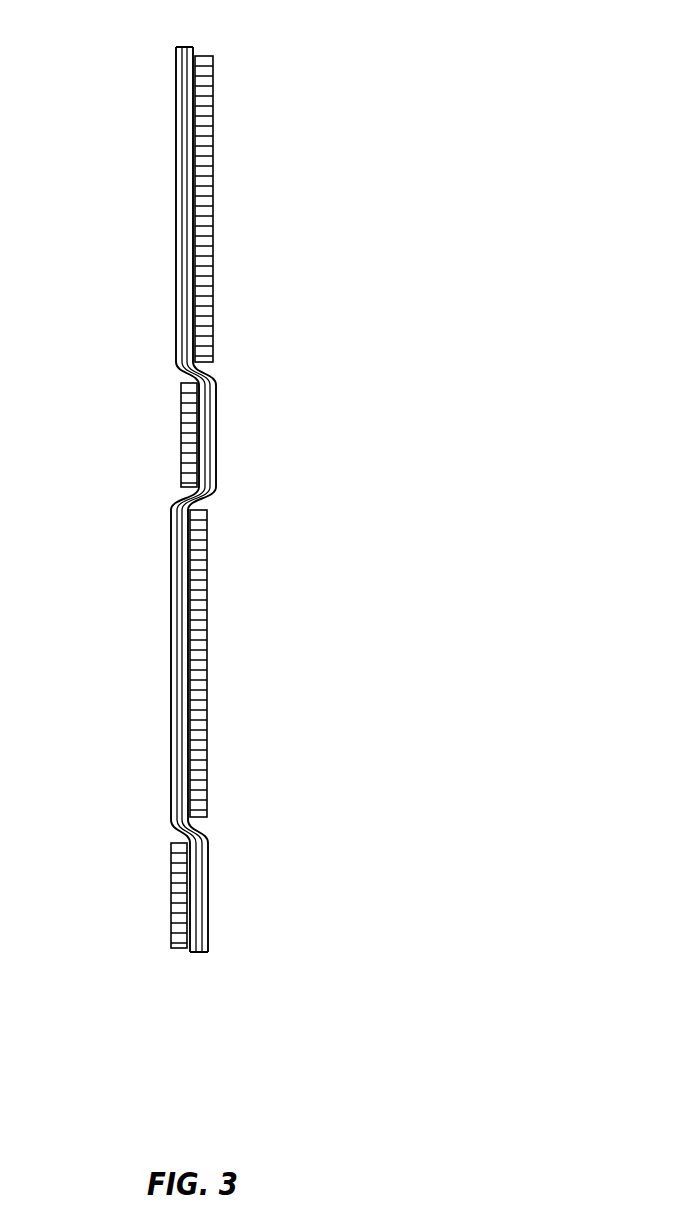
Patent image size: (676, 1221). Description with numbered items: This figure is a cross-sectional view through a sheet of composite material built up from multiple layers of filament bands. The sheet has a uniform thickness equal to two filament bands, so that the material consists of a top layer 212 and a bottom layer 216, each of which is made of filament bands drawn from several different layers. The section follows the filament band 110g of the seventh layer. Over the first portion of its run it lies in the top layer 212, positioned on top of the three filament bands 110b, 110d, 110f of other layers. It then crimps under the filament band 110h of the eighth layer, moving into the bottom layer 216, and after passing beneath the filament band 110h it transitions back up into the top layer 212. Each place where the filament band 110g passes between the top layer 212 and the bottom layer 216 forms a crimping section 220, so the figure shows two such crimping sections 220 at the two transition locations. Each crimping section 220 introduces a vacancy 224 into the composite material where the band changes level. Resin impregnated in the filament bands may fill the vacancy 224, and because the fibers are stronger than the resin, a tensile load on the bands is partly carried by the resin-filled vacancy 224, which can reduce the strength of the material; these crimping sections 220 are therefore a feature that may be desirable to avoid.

The filament band of the second layer 110b is at (280, 436).
The filament band of the fourth layer 110d is at (280, 436).
The filament band of the sixth layer 110f is at (213, 313).
The filament band of the seventh layer 110g is at (195, 523).
The filament band of the eighth layer 110h is at (181, 437).
The crimping section 220 is at (197, 591).
The vacancy 224 is at (207, 502).
The top layer 212 is at (205, 563).
The bottom layer 216 is at (203, 953).